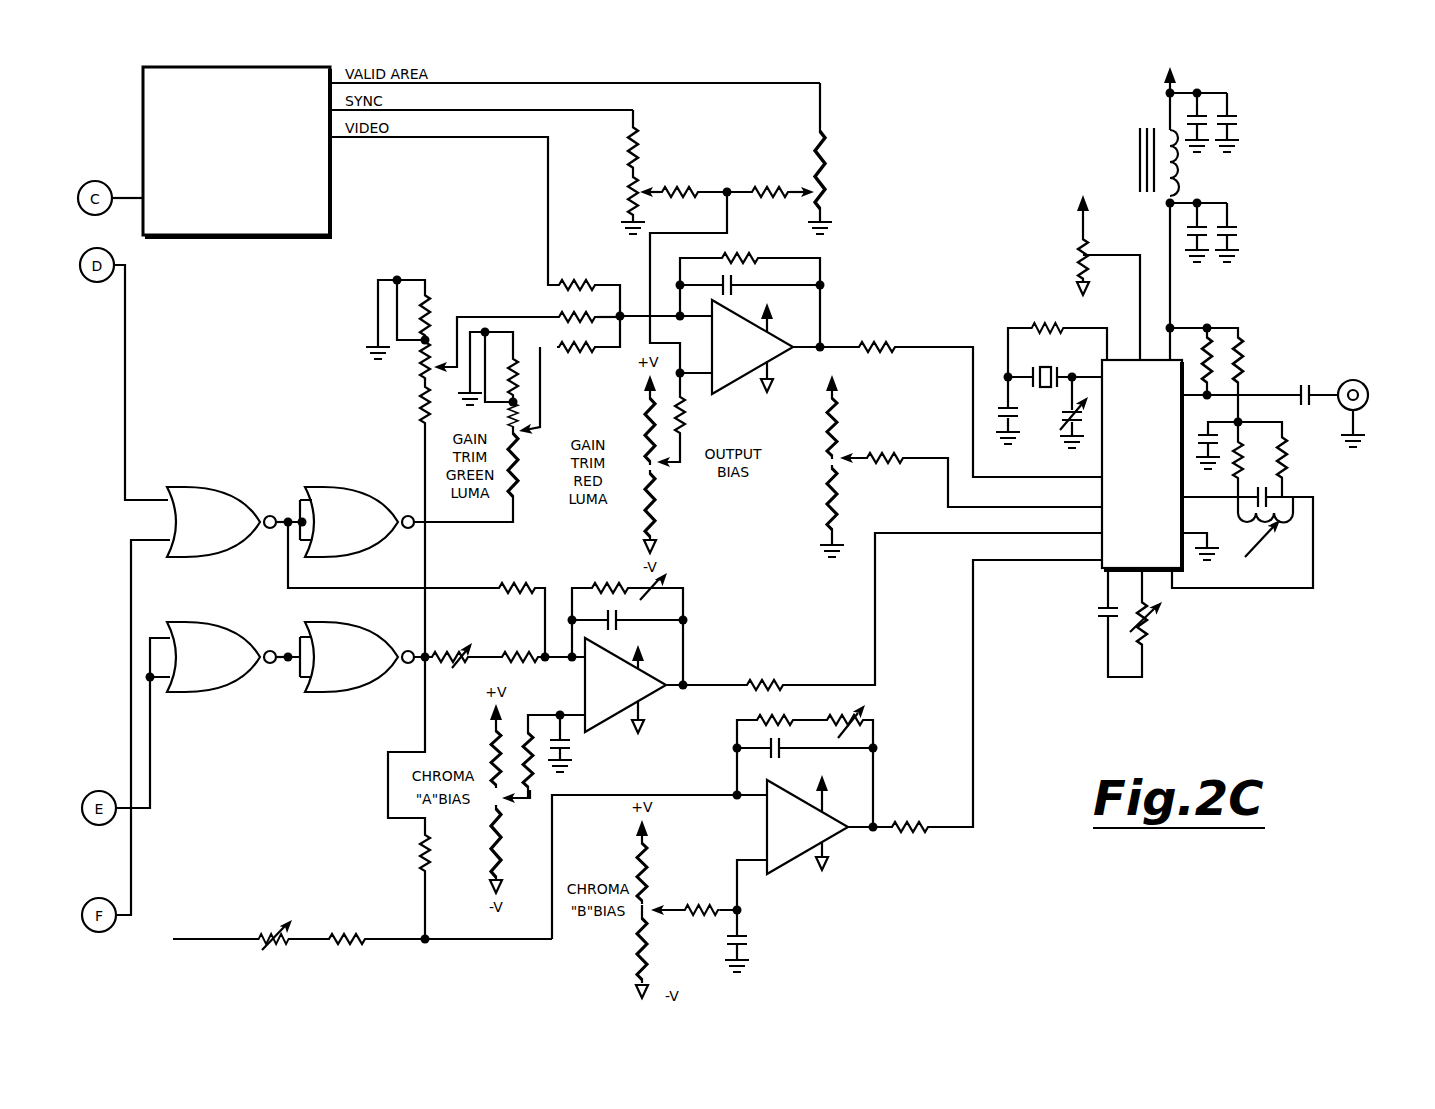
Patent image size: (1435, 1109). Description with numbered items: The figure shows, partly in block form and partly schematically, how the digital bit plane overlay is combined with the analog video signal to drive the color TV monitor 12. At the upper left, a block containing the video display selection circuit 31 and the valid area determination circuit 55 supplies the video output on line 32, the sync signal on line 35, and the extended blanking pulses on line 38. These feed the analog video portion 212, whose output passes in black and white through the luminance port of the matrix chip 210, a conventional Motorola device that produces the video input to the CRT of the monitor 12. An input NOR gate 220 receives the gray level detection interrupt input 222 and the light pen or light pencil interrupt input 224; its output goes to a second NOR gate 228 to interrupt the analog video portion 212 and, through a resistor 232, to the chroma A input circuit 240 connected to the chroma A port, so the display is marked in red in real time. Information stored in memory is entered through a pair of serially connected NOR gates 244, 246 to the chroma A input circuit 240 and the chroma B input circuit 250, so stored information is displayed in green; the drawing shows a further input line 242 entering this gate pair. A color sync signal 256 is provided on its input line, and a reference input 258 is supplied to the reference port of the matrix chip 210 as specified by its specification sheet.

The video display selection circuit 31 is at (236, 152).
The valid area determination circuit 55 is at (236, 152).
The line 32 is at (548, 182).
The line 35 is at (633, 120).
The line 38 is at (822, 103).
The analog video portion 212 is at (859, 167).
The light pen or light pencil interrupt input 224 is at (125, 418).
The gray level detection interrupt input 222 is at (131, 563).
The input line E 242 is at (150, 735).
The input NOR gate 220 is at (195, 544).
The second NOR gate 228 is at (335, 544).
The NOR gate 244 is at (200, 679).
The NOR gate 246 is at (335, 679).
The resistor 232 is at (512, 588).
The chroma A input circuit 240 is at (693, 582).
The chroma B input circuit 250 is at (715, 780).
The reference input 258 is at (862, 428).
The color sync signal 256 is at (240, 937).
The matrix chip 210 is at (1123, 460).
The color TV monitor 12 is at (1383, 376).